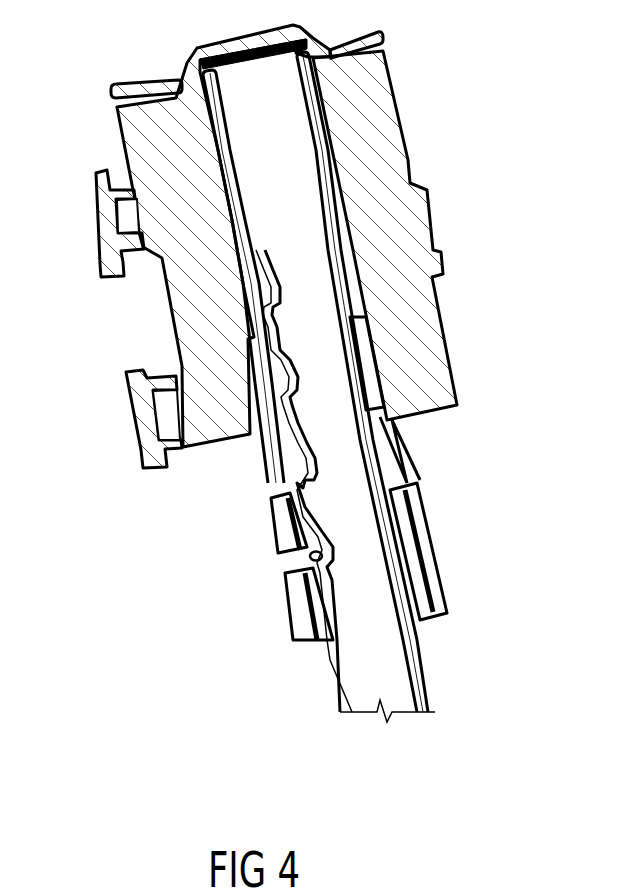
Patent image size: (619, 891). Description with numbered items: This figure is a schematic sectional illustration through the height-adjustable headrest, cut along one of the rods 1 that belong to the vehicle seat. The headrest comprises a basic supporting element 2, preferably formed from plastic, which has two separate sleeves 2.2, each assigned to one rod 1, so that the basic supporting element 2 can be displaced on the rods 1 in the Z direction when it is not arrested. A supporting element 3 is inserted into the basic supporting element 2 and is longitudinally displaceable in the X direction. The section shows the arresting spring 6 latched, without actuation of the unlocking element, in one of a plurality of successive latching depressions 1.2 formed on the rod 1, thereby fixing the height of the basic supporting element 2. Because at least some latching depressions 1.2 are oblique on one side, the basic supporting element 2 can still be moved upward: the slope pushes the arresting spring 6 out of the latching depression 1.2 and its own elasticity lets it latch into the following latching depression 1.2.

The rod 1 is at (400, 675).
The latching depression 1.2 is at (307, 468).
The basic supporting element 2 is at (162, 110).
The sleeve 2.2 is at (417, 580).
The supporting element 3 is at (108, 215).
The arresting spring 6 is at (310, 555).